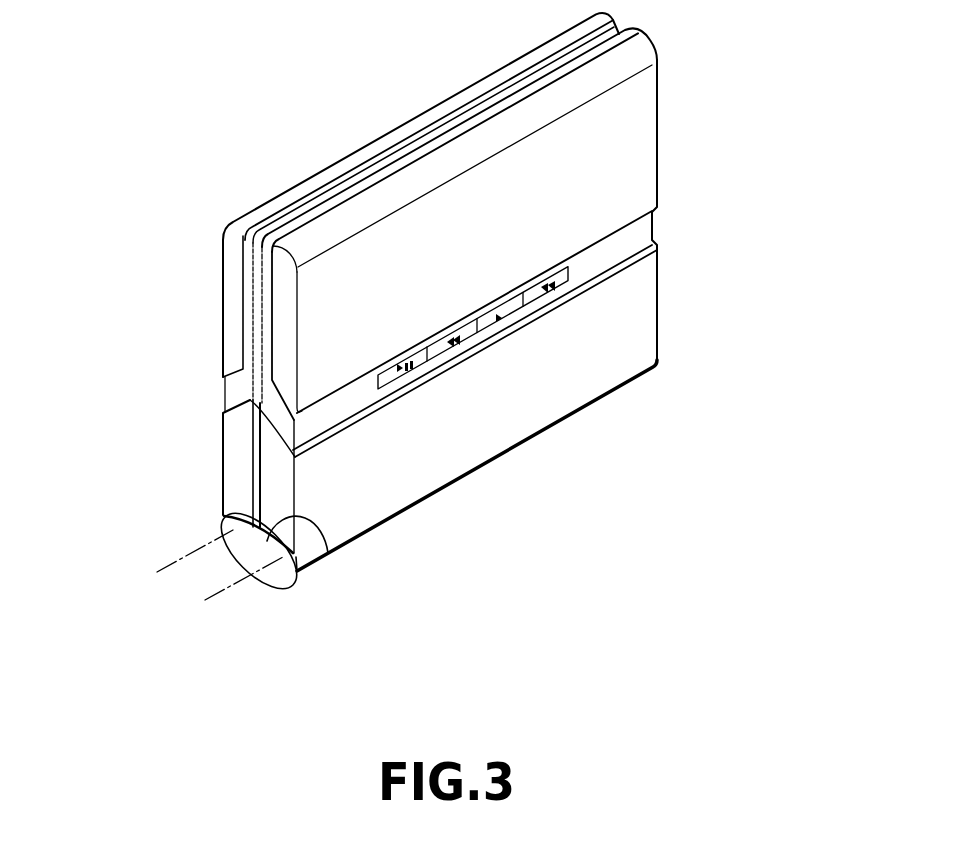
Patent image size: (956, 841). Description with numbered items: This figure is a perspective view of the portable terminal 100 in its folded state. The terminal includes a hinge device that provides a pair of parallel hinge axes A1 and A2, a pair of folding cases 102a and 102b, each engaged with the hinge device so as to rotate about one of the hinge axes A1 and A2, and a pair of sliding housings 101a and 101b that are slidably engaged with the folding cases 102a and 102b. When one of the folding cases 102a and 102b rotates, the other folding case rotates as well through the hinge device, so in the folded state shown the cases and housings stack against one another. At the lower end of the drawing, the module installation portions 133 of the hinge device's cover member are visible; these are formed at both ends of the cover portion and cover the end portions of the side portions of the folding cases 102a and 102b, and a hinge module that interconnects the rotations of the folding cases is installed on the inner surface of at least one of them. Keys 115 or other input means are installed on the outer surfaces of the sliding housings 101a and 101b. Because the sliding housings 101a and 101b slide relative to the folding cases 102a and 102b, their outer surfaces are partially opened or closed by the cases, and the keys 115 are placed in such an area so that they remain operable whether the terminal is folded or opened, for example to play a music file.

The portable terminal 100 is at (402, 26).
The sliding housing 101a is at (503, 224).
The sliding housing 101b is at (421, 212).
The folding case 102a is at (506, 408).
The folding case 102b is at (214, 476).
The keys 115 is at (513, 307).
The module installation portion 133 is at (263, 548).
The hinge axis A1 is at (230, 588).
The hinge axis A2 is at (180, 560).